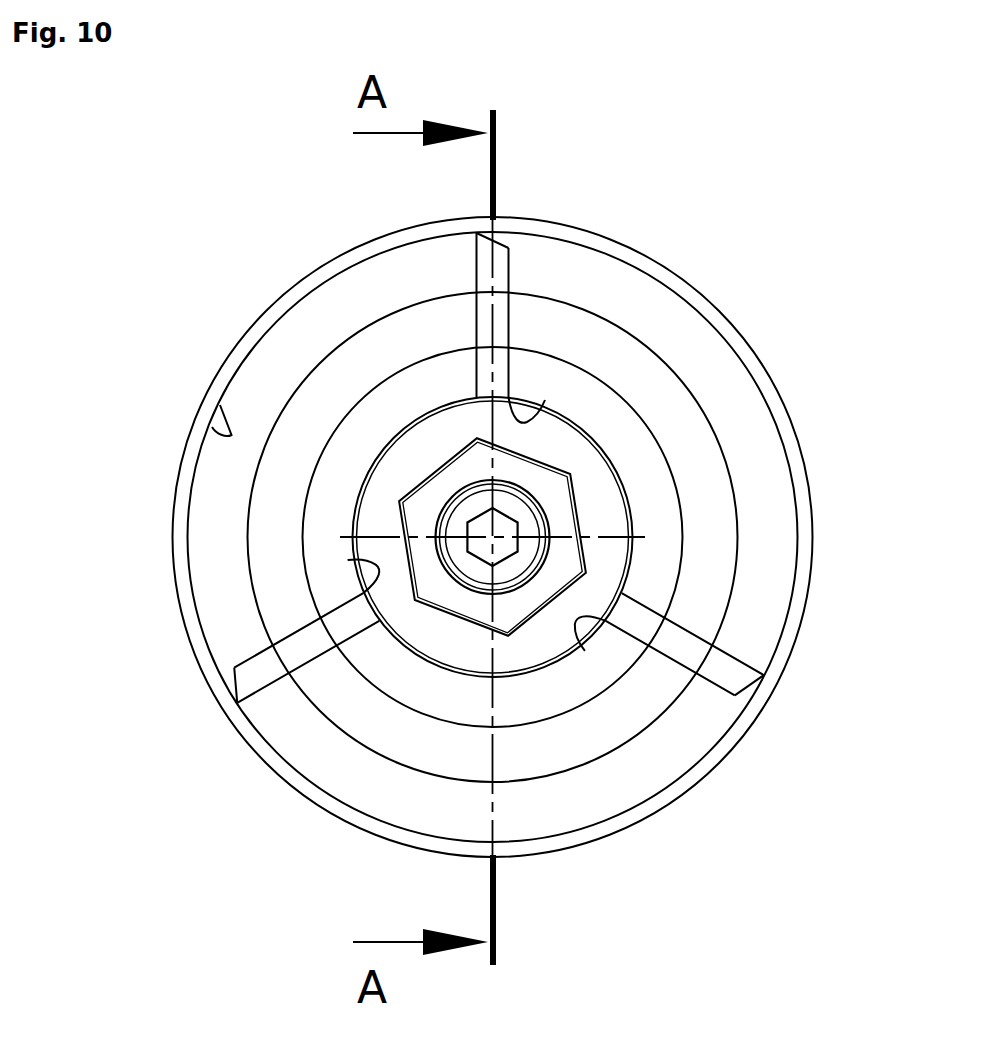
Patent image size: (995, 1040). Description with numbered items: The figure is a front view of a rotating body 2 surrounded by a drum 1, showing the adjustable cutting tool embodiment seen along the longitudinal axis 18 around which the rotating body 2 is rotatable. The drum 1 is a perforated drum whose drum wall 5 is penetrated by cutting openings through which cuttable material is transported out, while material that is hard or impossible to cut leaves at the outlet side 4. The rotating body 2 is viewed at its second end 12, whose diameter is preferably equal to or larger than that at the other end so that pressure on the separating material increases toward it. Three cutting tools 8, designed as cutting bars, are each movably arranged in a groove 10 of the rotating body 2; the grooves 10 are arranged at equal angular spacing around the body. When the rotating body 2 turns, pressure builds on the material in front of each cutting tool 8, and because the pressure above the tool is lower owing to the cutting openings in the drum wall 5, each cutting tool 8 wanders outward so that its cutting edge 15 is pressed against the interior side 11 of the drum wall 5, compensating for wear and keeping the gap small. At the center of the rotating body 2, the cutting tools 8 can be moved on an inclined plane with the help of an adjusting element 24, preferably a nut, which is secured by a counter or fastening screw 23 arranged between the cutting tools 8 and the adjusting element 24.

The drum 1 is at (680, 272).
The rotating body 2 is at (718, 505).
The outlet side 4 is at (283, 308).
The drum wall 5 is at (763, 375).
The cutting tool 8 is at (485, 317).
The groove 10 is at (527, 420).
The interior side 11 is at (227, 427).
The second end 12 is at (745, 467).
The cutting edge 15 is at (498, 244).
The longitudinal axis 18 is at (485, 545).
The counter or fastening screw 23 is at (502, 528).
The adjusting element 24 is at (428, 507).